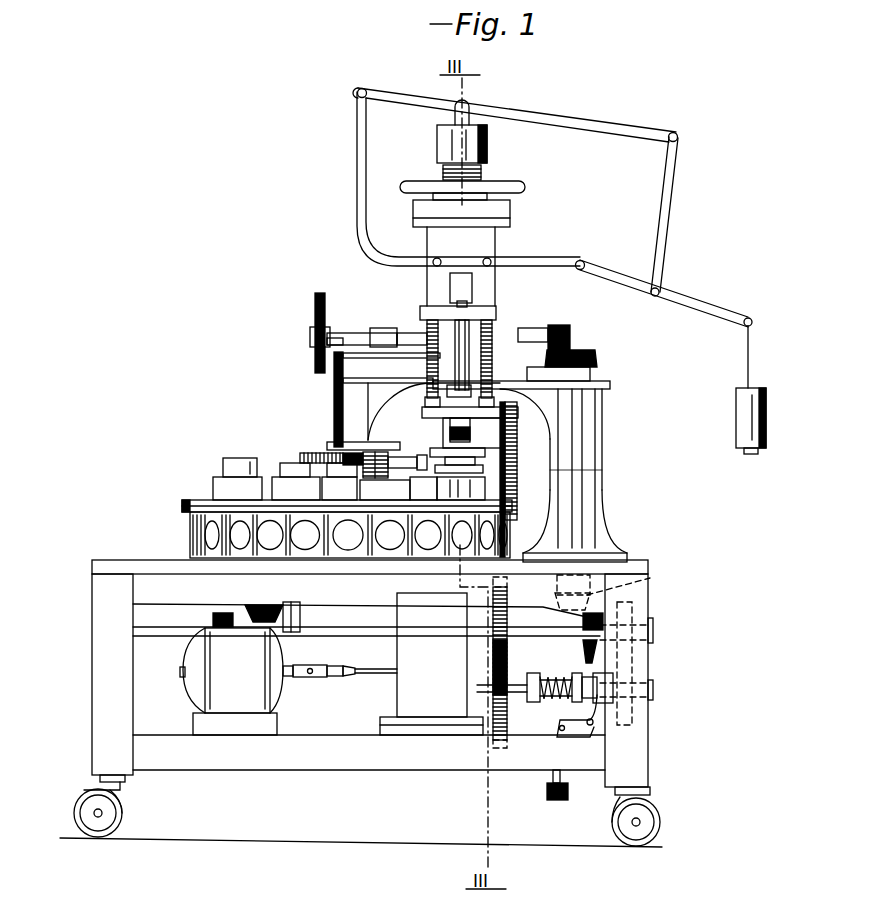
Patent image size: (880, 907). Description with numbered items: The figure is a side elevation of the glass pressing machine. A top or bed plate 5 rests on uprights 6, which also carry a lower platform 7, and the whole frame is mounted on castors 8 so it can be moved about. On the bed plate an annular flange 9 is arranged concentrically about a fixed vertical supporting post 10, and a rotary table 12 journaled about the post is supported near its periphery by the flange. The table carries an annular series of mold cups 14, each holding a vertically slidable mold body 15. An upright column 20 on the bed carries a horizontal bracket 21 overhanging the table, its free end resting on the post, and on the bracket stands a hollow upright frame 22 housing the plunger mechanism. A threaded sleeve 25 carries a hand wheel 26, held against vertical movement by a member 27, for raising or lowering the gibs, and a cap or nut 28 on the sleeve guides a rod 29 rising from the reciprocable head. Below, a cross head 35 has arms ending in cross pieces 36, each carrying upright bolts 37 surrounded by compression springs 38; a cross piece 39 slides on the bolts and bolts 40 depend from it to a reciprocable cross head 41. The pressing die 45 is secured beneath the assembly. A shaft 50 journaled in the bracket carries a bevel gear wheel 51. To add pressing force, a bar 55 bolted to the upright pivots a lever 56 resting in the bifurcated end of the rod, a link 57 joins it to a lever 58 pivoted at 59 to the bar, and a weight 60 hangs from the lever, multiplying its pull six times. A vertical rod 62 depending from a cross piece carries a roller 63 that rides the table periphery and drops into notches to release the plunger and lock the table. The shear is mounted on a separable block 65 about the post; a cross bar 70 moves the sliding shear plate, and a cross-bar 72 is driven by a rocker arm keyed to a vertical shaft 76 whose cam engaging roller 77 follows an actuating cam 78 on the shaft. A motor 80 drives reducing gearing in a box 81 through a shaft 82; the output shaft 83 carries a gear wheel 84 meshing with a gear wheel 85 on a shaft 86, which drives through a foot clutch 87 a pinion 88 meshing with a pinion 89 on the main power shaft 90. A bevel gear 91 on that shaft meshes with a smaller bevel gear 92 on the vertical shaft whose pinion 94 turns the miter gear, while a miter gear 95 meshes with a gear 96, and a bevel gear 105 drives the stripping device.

The top or bed plate 5 is at (106, 560).
The uprights 6 is at (92, 667).
The platform 7 is at (324, 760).
The castors 8 is at (124, 810).
The annular flange 9 is at (190, 533).
The fixed vertical supporting post 10 is at (362, 493).
The table 12 is at (187, 500).
The mold cups 14 is at (262, 477).
The mold body 15 is at (238, 458).
The upright column 20 is at (590, 435).
The horizontal bracket 21 is at (560, 372).
The upright frame 22 is at (495, 283).
The threaded sleeve 25 is at (482, 176).
The hand wheel 26 is at (525, 188).
The member 27 is at (510, 212).
The cap or nut 28 is at (437, 140).
The rod 29 is at (470, 112).
The cross head 35 is at (470, 437).
The cross pieces 36 is at (525, 410).
The upright bolt 37 is at (428, 326).
The compression spring 38 is at (494, 340).
The cross piece 39 is at (427, 310).
The bolts 40 is at (470, 352).
The reciprocable cross head 41 is at (447, 390).
The pressing die 45 is at (560, 472).
The shaft 50 is at (356, 324).
The bevel gear wheel 51 is at (560, 336).
The bar 55 is at (357, 220).
The lever 56 is at (532, 112).
The link 57 is at (668, 228).
The lever 58 is at (697, 300).
The pivot 59 is at (583, 261).
The weight 60 is at (736, 428).
The vertical rod 62 is at (485, 455).
The roller 63 is at (500, 494).
The separable block 65 is at (378, 452).
The cross bar 70 is at (420, 455).
The cross-bar 72 is at (300, 453).
The vertical shaft 76 is at (334, 397).
The cam engaging roller 77 is at (312, 341).
The actuating cam 78 is at (315, 300).
The motor 80 is at (231, 681).
The box 81 is at (431, 664).
The shaft 82 is at (370, 674).
The shaft 83 is at (569, 640).
The gear wheel 84 is at (507, 652).
The gear wheel 85 is at (490, 738).
The shaft 86 is at (518, 700).
The foot clutch 87 is at (600, 700).
The pinion 88 is at (653, 664).
The pinion 89 is at (652, 608).
The main power shaft 90 is at (176, 640).
The bevel gear 91 is at (640, 580).
The bevel gear 92 is at (625, 575).
The pinion 94 is at (586, 360).
The miter gear 95 is at (291, 602).
The gear 96 is at (258, 605).
The bevel gear 105 is at (222, 612).